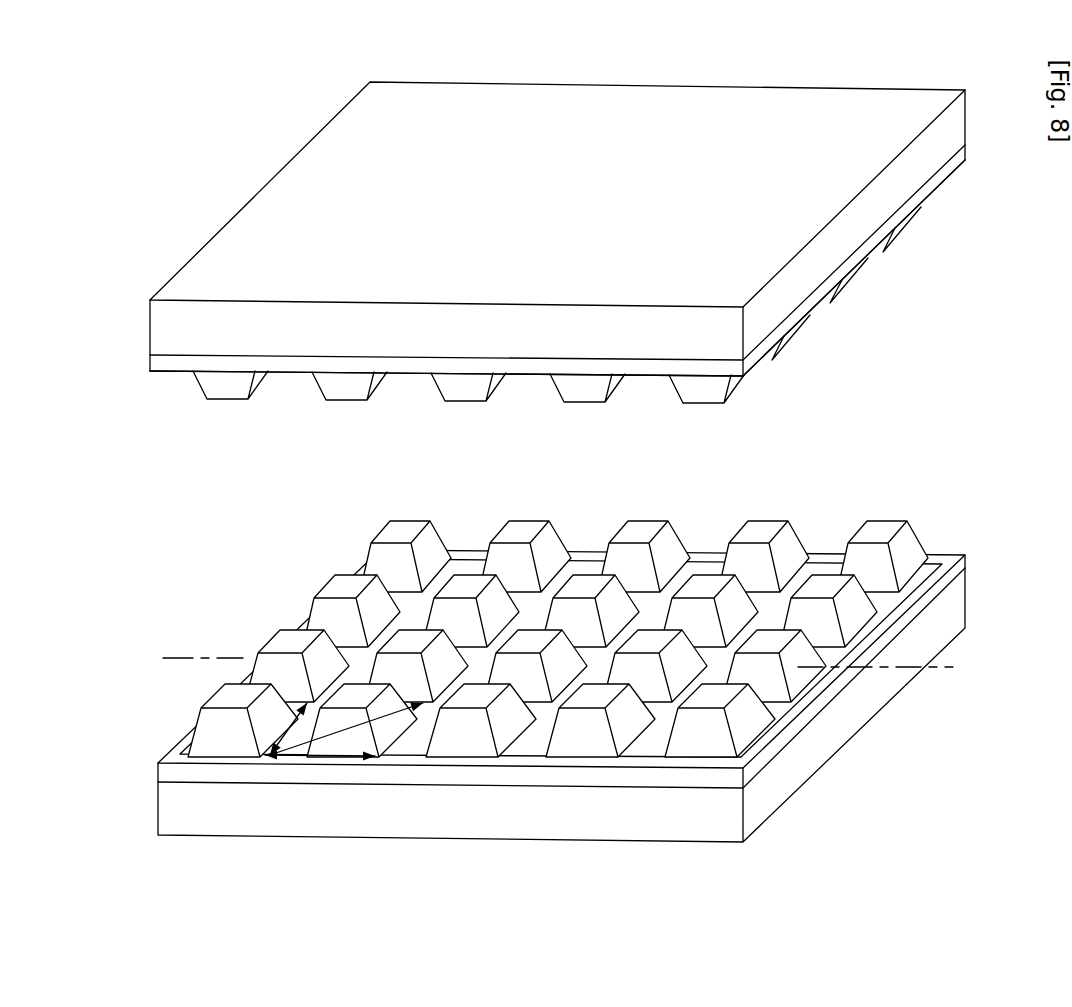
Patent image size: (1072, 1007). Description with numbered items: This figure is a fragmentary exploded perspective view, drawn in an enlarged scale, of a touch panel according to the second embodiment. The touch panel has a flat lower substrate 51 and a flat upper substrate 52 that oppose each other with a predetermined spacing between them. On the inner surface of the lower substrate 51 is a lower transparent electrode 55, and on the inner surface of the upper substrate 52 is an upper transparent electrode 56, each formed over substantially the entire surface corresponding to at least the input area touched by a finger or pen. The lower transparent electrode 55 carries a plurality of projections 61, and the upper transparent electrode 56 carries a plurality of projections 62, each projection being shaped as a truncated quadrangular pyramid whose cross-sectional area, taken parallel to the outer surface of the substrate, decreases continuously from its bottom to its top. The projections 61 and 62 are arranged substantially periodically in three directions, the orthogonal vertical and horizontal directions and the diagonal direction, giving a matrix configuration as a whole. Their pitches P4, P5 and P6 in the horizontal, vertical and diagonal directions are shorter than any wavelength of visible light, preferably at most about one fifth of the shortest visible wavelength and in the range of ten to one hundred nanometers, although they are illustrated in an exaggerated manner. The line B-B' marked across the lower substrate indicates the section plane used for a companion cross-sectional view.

The lower substrate 51 is at (532, 818).
The upper substrate 52 is at (372, 122).
The lower transparent electrode 55 is at (805, 720).
The upper transparent electrode 56 is at (813, 303).
The projections 61 is at (327, 585).
The projections 62 is at (220, 402).
The pitch P4 is at (325, 757).
The pitch P5 is at (273, 750).
The pitch P6 is at (400, 707).
The section line B is at (188, 659).
The section line B' is at (890, 677).